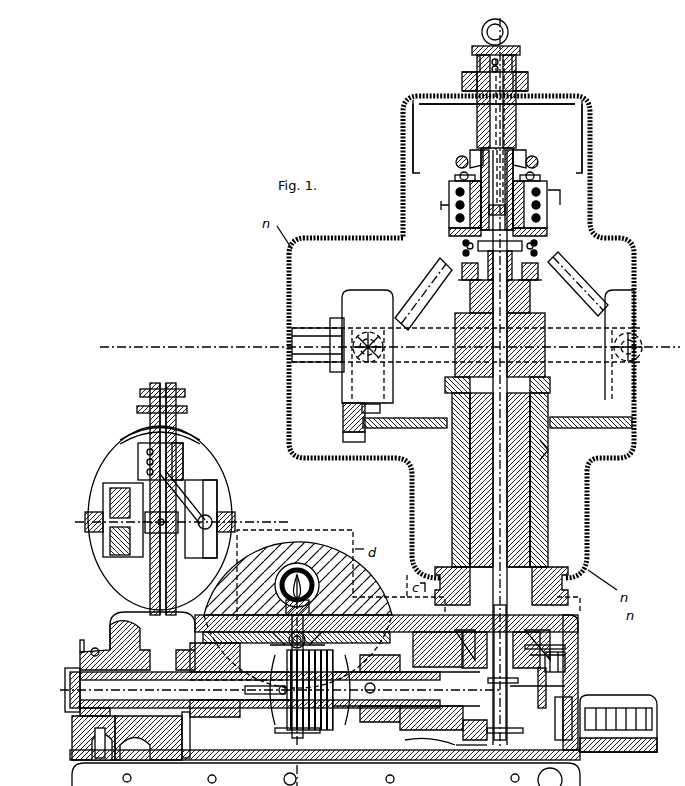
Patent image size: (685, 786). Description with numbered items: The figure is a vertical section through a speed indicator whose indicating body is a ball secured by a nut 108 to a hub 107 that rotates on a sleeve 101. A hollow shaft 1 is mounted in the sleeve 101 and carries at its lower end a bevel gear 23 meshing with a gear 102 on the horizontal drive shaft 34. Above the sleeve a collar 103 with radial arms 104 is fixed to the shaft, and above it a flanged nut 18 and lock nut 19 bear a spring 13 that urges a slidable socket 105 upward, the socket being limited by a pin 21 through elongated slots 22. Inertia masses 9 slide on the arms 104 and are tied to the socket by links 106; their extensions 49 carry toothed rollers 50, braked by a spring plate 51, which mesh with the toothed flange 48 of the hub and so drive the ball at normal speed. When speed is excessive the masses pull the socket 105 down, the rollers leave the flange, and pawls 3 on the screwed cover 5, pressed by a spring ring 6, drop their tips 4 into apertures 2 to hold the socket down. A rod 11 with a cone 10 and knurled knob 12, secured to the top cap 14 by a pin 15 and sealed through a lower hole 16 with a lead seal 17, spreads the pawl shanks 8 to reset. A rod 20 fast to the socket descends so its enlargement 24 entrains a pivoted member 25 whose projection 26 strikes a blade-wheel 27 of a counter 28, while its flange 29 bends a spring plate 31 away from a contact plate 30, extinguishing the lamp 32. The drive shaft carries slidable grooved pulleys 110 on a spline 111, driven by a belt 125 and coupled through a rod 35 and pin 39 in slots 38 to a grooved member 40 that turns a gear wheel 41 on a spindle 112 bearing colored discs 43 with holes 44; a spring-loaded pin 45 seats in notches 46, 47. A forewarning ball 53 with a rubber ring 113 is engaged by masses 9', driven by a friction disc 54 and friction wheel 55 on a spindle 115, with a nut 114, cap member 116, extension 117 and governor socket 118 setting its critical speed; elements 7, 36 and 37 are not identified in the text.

The hollow shaft 1 is at (512, 510).
The apertures 2 is at (460, 160).
The pawls 3 is at (537, 168).
The tips 4 is at (523, 147).
The cover 5 is at (460, 152).
The spring ring 6 is at (456, 176).
The valve bolts 7 is at (448, 195).
The shanks 8 is at (484, 150).
The inertia masses 9 is at (467, 332).
The inertia masses 9' is at (173, 518).
The cone 10 is at (560, 197).
The rod 11 is at (527, 130).
The knurled knob 12 is at (520, 100).
The spring 13 is at (546, 222).
The top cap 14 is at (508, 78).
The pin 15 is at (505, 62).
The lower hole 16 is at (510, 58).
The lead seal 17 is at (508, 33).
The flanged nut 18 is at (532, 282).
The lock nut 19 is at (470, 281).
The rod 20 is at (503, 553).
The pin 21 is at (468, 243).
The elongated slots 22 is at (540, 245).
The bevel gear 23 is at (578, 617).
The enlargement 24 is at (270, 731).
The member 25 is at (403, 742).
The projection 26 is at (455, 743).
The blade-wheel 27 is at (567, 700).
The counter 28 is at (610, 712).
The flange 29 is at (512, 687).
The insulated contact plate 30 is at (578, 652).
The spring plate 31 is at (567, 665).
The lamp 32 is at (315, 605).
The drive shaft 34 is at (400, 688).
The rod 35 is at (122, 685).
The casing wall 36 is at (73, 757).
The base plate 37 is at (77, 763).
The longitudinal slots 38 is at (263, 695).
The pin 39 is at (280, 703).
The grooved cylindrical member 40 is at (322, 665).
The gear wheel 41 is at (290, 642).
The discs 43 is at (330, 562).
The holes 44 is at (302, 570).
The spring-loaded pin 45 is at (80, 647).
The notch 46 is at (77, 670).
The notch 47 is at (70, 686).
The toothed flange 48 is at (395, 422).
The extensions 49 is at (345, 436).
The toothed rollers 50 is at (345, 417).
The spring plate 51 is at (367, 404).
The forewarning ball 53 is at (135, 468).
The friction disc 54 is at (182, 737).
The friction wheel 55 is at (125, 622).
The sleeve 101 is at (527, 486).
The gear 102 is at (471, 740).
The collar 103 is at (533, 321).
The radial arms 104 is at (552, 358).
The socket 105 is at (543, 227).
The links 106 is at (579, 289).
The hub 107 is at (548, 472).
The nut 108 is at (568, 585).
The grooved pulleys 110 is at (110, 637).
The spline 111 is at (113, 707).
The spindle 112 is at (287, 640).
The ring 113 is at (227, 513).
The nut 114 is at (170, 396).
The spindle 115 is at (152, 583).
The cap member 116 is at (182, 412).
The extension 117 is at (192, 435).
The governor socket 118 is at (175, 466).
The belt 125 is at (93, 750).